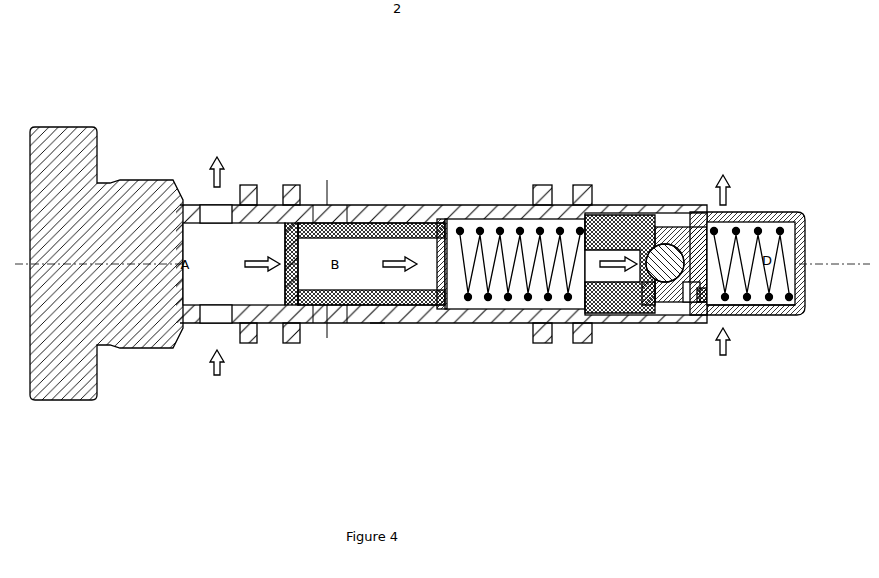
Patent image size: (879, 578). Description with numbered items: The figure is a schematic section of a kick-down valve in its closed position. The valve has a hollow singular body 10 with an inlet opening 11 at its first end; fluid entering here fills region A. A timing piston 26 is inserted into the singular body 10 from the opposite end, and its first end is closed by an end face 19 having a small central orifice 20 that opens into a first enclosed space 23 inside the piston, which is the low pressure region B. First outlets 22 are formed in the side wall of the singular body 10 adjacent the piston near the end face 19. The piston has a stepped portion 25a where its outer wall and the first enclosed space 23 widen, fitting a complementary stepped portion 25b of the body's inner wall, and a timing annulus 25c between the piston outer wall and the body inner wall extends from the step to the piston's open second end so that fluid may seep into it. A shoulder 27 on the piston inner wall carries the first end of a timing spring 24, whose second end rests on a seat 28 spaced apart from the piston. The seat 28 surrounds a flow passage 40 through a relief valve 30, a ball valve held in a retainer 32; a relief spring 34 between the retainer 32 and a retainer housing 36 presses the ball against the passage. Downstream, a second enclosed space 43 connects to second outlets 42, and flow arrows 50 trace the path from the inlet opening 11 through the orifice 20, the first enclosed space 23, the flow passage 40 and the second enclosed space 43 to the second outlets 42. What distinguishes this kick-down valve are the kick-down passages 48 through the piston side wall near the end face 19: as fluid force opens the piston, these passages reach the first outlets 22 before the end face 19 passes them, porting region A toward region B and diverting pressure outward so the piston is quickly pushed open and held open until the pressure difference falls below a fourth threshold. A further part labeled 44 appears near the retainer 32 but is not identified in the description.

The singular body 10 is at (277, 198).
The inlet opening 11 is at (203, 196).
The end face 19 is at (278, 200).
The orifice 20 is at (288, 343).
The first outlets 22 is at (334, 323).
The first enclosed space 23 is at (368, 235).
The timing spring 24 is at (486, 226).
The stepped portion 25a is at (457, 207).
The complementary stepped portion 25b is at (418, 205).
The timing annulus 25c is at (558, 205).
The timing piston 26 is at (378, 323).
The shoulder 27 is at (451, 323).
The seat 28 is at (580, 205).
The relief valve 30 is at (658, 215).
The retainer 32 is at (693, 205).
The relief spring 34 is at (750, 215).
The retainer housing 36 is at (806, 252).
The flow passage 40 is at (598, 323).
The second outlets 42 is at (742, 305).
The second enclosed space 43 is at (764, 308).
The plunger seat 44 is at (628, 325).
The kick-down passages 48 is at (292, 203).
The flow arrows 50 is at (248, 270).